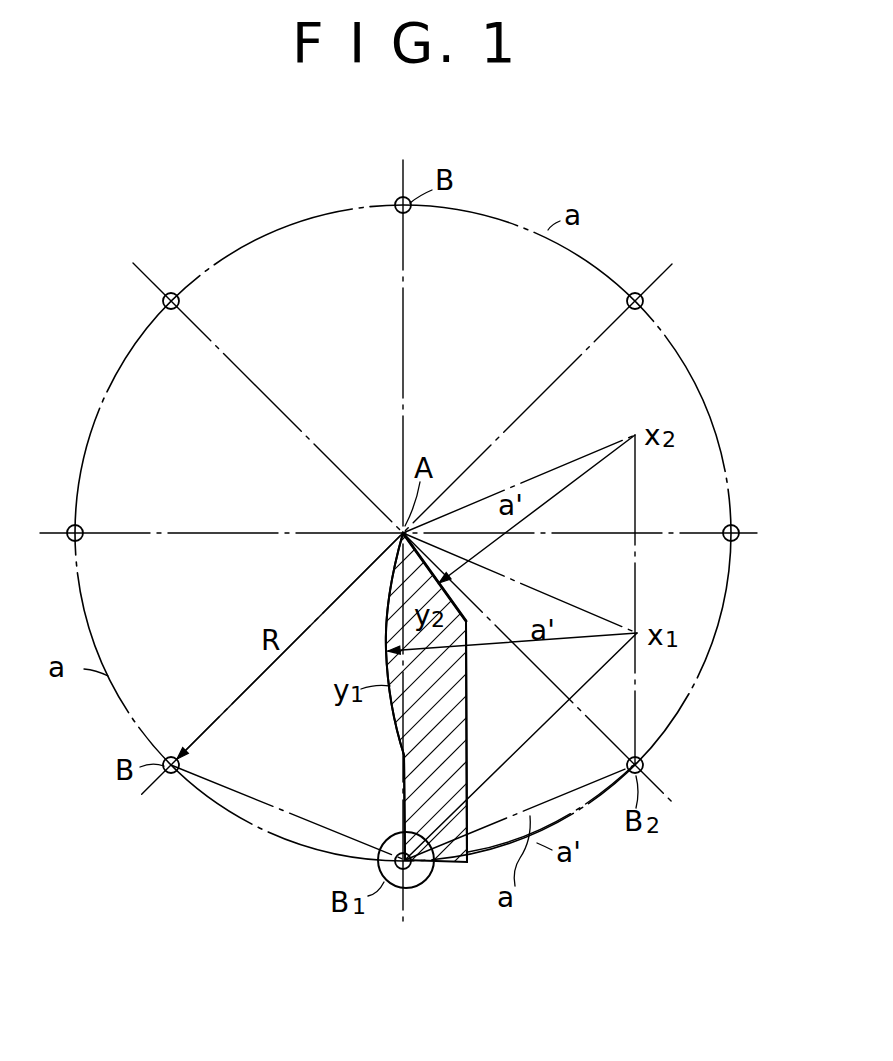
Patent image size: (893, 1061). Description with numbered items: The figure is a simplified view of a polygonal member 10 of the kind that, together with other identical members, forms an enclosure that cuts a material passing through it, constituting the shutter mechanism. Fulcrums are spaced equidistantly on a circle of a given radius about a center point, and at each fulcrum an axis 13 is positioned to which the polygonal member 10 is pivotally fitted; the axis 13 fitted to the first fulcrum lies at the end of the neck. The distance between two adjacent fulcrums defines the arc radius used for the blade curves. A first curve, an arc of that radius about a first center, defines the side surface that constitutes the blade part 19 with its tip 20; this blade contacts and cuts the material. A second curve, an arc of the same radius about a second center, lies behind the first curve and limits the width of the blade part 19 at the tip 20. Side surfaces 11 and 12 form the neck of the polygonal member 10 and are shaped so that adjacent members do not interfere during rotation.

The polygonal member 10 is at (410, 797).
The side surface 11 is at (400, 766).
The side surface 12 is at (468, 742).
The axis 13 is at (425, 880).
The blade part 19 is at (388, 622).
The tip 20 is at (395, 540).